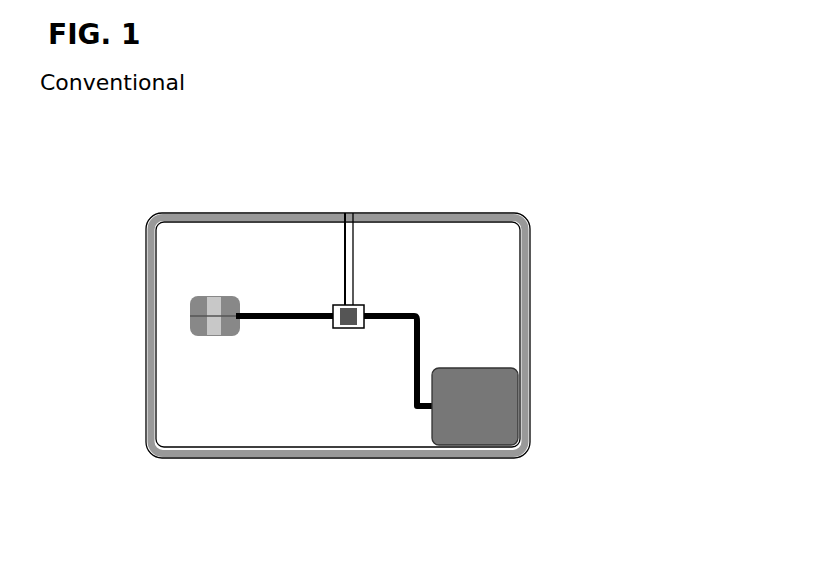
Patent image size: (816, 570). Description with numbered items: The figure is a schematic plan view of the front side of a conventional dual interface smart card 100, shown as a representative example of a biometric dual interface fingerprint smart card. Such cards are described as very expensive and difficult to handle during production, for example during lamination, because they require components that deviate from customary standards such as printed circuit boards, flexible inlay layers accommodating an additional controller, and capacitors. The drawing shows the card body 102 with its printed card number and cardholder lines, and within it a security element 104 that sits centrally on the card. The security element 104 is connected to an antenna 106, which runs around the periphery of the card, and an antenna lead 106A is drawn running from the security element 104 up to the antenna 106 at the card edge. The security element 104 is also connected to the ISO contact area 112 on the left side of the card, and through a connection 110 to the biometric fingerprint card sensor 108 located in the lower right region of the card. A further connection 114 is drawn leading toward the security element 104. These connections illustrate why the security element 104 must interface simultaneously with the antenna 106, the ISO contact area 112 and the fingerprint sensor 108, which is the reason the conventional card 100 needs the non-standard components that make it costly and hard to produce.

The dual interface smart card 100 is at (576, 147).
The card body 102 is at (310, 338).
The security element 104 is at (337, 305).
The antenna 106 is at (150, 280).
The antenna/lead line to card edge 106A is at (354, 258).
The biometric fingerprint card sensor 108 is at (512, 430).
The wire/connection 110 is at (412, 410).
The ISO contact area 112 is at (206, 335).
The leader component 114 is at (332, 306).